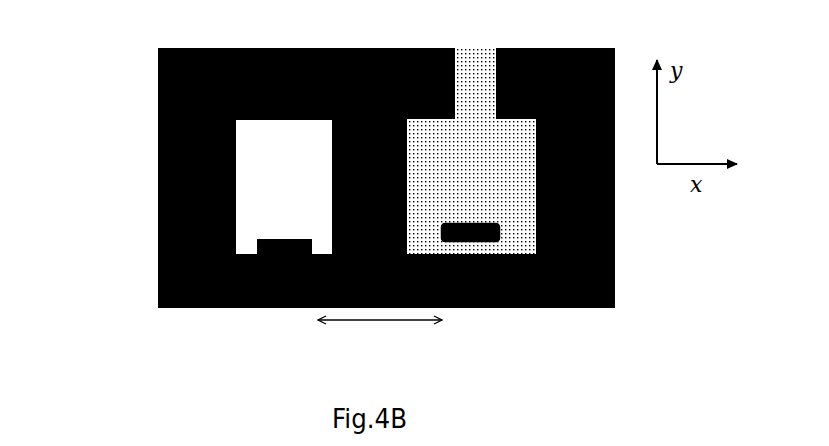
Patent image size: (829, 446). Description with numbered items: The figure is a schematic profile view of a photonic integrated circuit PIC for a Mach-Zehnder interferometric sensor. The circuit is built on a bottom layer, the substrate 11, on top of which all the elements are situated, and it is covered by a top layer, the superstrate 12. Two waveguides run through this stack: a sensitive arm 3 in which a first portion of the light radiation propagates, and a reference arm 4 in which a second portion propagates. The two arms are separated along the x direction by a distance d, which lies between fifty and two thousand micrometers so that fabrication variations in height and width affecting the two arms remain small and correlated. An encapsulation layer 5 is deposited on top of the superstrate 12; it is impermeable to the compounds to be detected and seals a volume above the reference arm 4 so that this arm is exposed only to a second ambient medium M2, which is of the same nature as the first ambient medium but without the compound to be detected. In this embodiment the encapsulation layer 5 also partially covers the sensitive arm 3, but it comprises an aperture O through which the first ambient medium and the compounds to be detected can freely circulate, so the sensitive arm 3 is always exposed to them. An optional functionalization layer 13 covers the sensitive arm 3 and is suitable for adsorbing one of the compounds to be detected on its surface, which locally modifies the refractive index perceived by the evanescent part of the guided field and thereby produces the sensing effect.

The encapsulation layer 5 is at (157, 78).
The aperture O is at (474, 62).
The photonic integrated circuit PIC is at (140, 252).
The second ambient medium M2 is at (244, 236).
The reference arm 4 is at (285, 250).
The functionalization layer 13 is at (453, 222).
The sensitive arm 3 is at (462, 250).
The superstrate 12 is at (615, 237).
The substrate 11 is at (618, 288).
The separation distance d is at (380, 334).